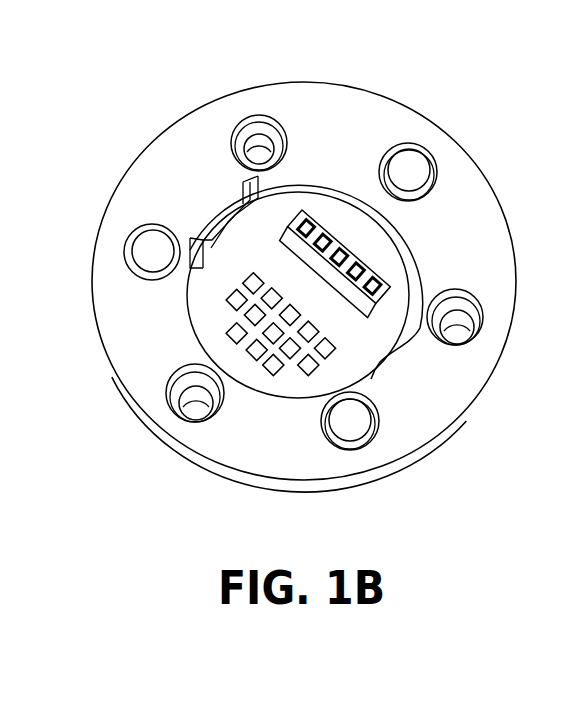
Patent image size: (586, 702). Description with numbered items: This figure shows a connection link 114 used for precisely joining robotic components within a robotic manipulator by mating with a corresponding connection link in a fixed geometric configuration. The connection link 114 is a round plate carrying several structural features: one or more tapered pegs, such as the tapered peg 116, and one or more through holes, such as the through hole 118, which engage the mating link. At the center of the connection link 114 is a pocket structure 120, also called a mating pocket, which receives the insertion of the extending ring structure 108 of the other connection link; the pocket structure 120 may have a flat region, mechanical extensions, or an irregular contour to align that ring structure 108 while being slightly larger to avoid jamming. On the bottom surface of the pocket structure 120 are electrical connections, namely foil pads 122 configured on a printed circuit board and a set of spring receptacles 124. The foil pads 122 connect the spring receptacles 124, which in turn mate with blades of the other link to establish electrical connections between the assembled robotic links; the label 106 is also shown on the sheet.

The sensor module 106 is at (15, 388).
The ring structure 108 is at (20, 466).
The connection link 114 is at (200, 105).
The tapered peg 116 is at (133, 228).
The through hole 118 is at (482, 322).
The pocket structure 120 is at (231, 208).
The foil pads 122 is at (273, 376).
The spring receptacles 124 is at (370, 278).